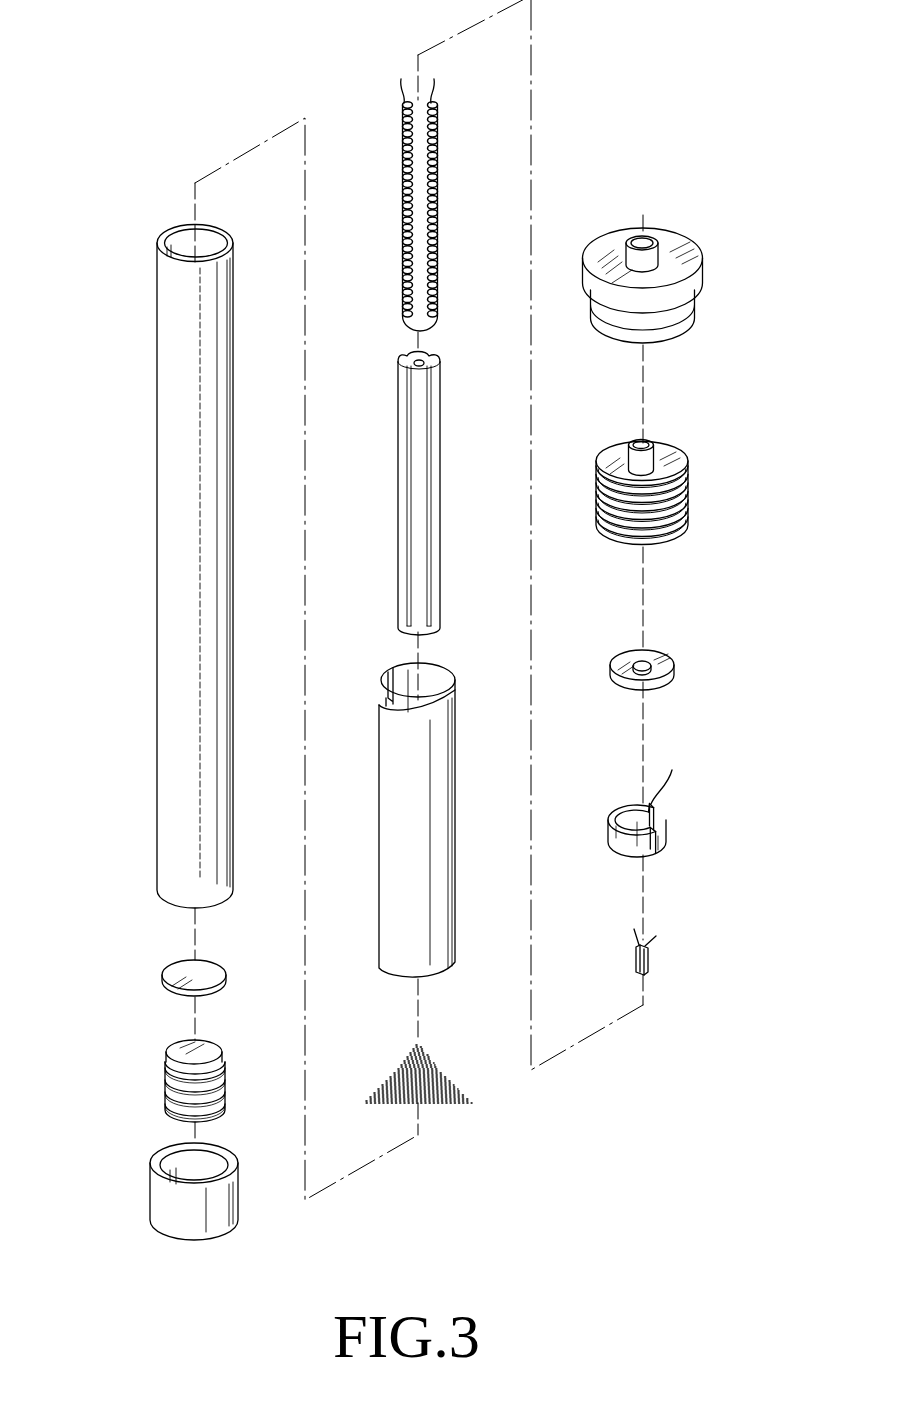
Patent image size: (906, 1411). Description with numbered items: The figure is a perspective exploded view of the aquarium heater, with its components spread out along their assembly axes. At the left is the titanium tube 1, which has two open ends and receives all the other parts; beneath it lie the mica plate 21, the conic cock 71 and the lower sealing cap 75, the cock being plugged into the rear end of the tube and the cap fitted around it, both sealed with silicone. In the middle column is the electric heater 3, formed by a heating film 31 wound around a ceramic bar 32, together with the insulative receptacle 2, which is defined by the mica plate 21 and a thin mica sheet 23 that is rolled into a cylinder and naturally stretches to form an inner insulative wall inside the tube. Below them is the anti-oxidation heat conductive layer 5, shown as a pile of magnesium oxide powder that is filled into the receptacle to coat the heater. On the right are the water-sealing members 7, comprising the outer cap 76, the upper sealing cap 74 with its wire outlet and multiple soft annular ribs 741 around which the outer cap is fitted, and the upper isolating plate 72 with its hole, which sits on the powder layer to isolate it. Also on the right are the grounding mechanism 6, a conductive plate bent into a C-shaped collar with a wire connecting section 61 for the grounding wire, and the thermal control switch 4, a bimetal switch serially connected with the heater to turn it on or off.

The titanium tube 1 is at (157, 558).
The mica plate 21 is at (175, 983).
The conic cock 71 is at (165, 1075).
The lower sealing cap 75 is at (160, 1197).
The electric heater 3 is at (403, 206).
The heating film 31 is at (437, 180).
The ceramic bar 32 is at (410, 495).
The insulative receptacle 2 is at (417, 820).
The thin mica sheet 23 is at (440, 828).
The anti-oxidation heat conductive layer 5 is at (388, 1071).
The water-sealing members 7 is at (688, 251).
The outer cap 76 is at (700, 290).
The upper sealing cap 74 is at (697, 477).
The soft annular ribs 741 is at (690, 500).
The upper isolating plate 72 is at (675, 660).
The grounding mechanism 6 is at (650, 834).
The wire connecting section 61 is at (665, 802).
The thermal control switch 4 is at (630, 965).